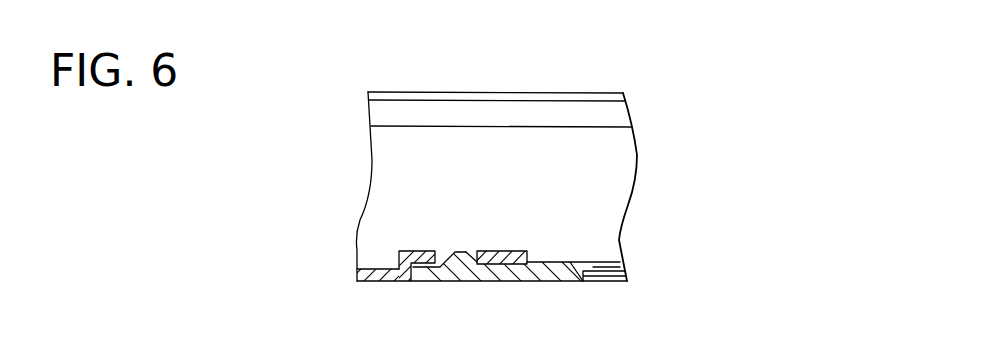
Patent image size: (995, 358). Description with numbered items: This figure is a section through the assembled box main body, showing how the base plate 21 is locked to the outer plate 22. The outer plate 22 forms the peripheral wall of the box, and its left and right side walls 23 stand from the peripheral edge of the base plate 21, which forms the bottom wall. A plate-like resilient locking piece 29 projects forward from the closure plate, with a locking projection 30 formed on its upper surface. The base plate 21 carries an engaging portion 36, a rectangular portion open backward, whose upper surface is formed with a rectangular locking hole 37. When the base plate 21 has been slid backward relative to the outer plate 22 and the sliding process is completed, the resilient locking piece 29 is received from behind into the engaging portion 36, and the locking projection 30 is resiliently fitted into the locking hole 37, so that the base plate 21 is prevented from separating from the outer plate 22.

The base plate 21 is at (385, 282).
The outer plate 22 is at (591, 101).
The side wall 23 is at (625, 172).
The resilient locking piece 29 is at (443, 282).
The locking projection 30 is at (455, 262).
The engaging portion 36 is at (510, 252).
The locking hole 37 is at (476, 255).